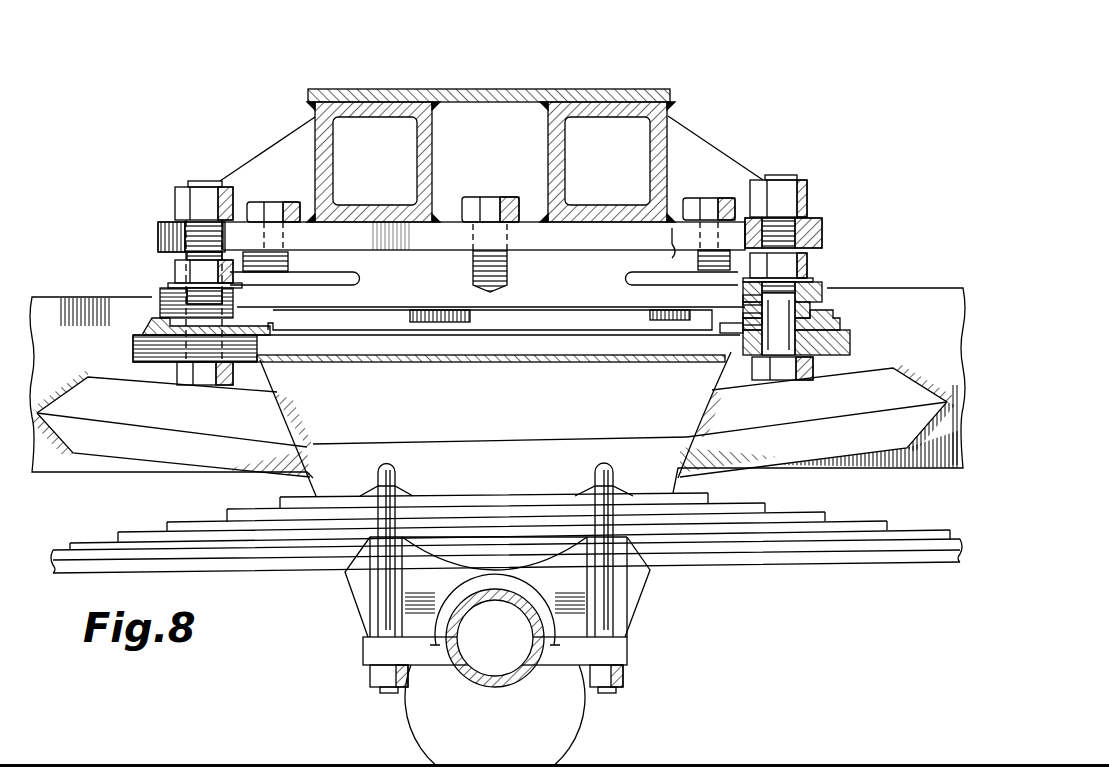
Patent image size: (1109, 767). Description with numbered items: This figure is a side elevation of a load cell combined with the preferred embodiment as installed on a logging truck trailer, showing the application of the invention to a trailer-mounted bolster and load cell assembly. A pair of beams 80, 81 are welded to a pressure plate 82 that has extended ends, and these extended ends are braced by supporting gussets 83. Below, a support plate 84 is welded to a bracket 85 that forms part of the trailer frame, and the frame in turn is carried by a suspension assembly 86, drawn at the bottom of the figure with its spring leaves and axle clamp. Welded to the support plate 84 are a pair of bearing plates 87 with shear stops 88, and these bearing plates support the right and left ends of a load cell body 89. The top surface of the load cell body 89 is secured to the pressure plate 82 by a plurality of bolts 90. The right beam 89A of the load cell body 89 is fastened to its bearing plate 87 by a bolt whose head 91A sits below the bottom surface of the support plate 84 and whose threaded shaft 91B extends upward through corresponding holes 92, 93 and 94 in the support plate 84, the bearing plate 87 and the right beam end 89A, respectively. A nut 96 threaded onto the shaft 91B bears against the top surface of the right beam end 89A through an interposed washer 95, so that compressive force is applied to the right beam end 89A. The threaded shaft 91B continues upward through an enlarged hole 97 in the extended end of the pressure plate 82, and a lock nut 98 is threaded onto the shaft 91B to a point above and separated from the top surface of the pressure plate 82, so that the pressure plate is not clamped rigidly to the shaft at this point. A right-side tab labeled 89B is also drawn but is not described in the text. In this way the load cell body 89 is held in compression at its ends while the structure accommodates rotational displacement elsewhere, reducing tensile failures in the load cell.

The beam 80 is at (355, 92).
The beam 81 is at (608, 100).
The pressure plate 82 is at (442, 227).
The supporting gussets 83 is at (272, 146).
The support plate 84 is at (850, 348).
The bracket 85 is at (675, 415).
The suspension assembly 86 is at (662, 632).
The bearing plates 87 is at (143, 330).
The shear stops 88 is at (163, 300).
The load cell body 89 is at (540, 270).
The right beam end 89A is at (823, 285).
The plate tab 89B is at (672, 226).
The bolts 90 is at (283, 222).
The head 91A is at (186, 372).
The threaded shaft 91B is at (743, 300).
The hole 92 is at (725, 356).
The hole 93 is at (745, 332).
The hole 94 is at (743, 320).
The washer 95 is at (692, 285).
The nut 96 is at (672, 250).
The enlarged hole 97 is at (158, 236).
The lock nut 98 is at (180, 200).